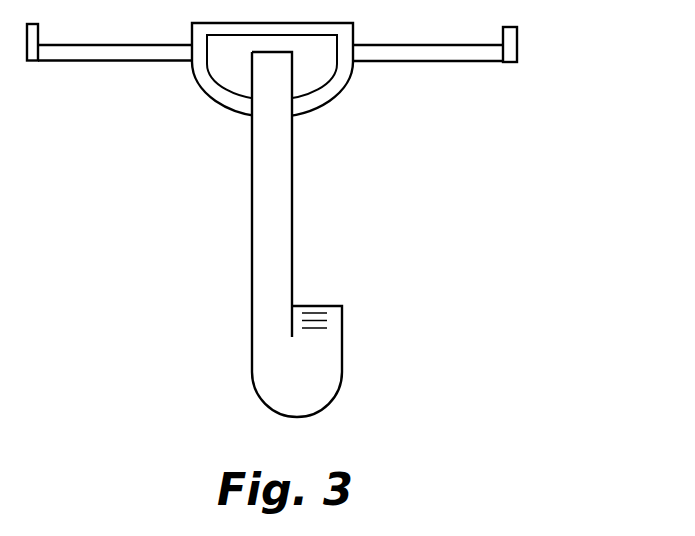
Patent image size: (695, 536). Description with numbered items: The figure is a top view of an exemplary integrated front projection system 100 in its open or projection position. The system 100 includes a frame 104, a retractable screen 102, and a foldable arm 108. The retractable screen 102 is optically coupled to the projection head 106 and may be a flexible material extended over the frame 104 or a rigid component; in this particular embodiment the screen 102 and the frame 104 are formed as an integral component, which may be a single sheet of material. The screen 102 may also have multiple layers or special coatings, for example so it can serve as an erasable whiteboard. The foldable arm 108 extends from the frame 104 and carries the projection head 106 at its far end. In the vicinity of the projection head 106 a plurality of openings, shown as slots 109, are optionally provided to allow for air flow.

The integrated front projection system 100 is at (311, 223).
The retractable screen 102 is at (434, 54).
The frame 104 is at (513, 40).
The projection head 106 is at (317, 387).
The foldable arm 108 is at (280, 190).
The slots 109 is at (315, 330).